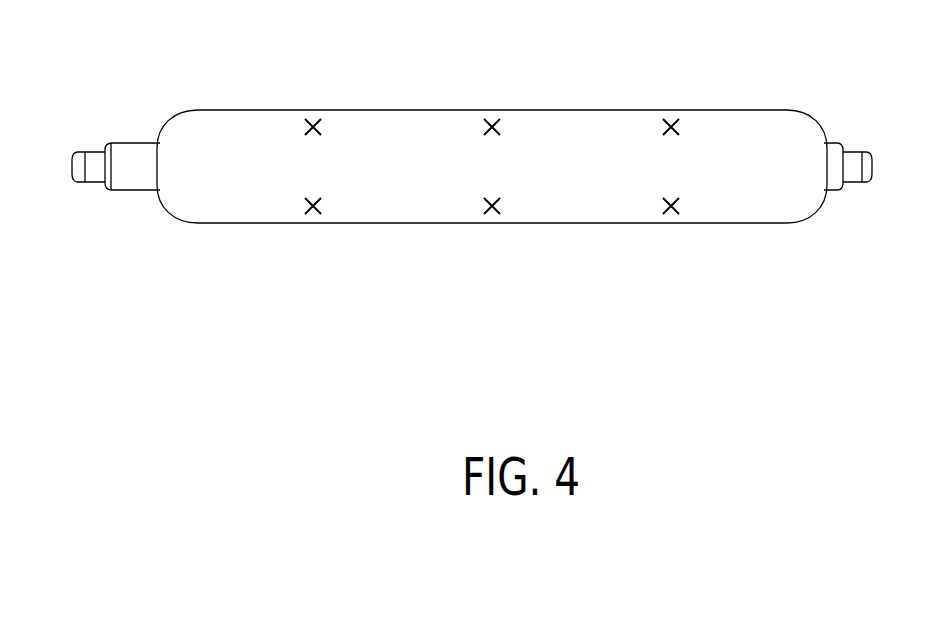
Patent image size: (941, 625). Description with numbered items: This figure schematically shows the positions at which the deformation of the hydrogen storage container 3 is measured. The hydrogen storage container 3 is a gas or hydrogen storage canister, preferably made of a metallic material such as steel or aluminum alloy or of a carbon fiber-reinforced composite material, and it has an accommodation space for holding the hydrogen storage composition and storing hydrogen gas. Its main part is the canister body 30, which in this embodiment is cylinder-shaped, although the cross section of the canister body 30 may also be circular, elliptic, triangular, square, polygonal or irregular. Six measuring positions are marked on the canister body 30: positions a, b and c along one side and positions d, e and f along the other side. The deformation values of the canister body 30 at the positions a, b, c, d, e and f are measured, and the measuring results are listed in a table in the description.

The hydrogen storage container 3 is at (805, 75).
The canister body 30 is at (202, 138).
The position a is at (313, 102).
The position b is at (492, 102).
The position c is at (671, 102).
The position d is at (313, 230).
The position e is at (492, 232).
The position f is at (671, 230).